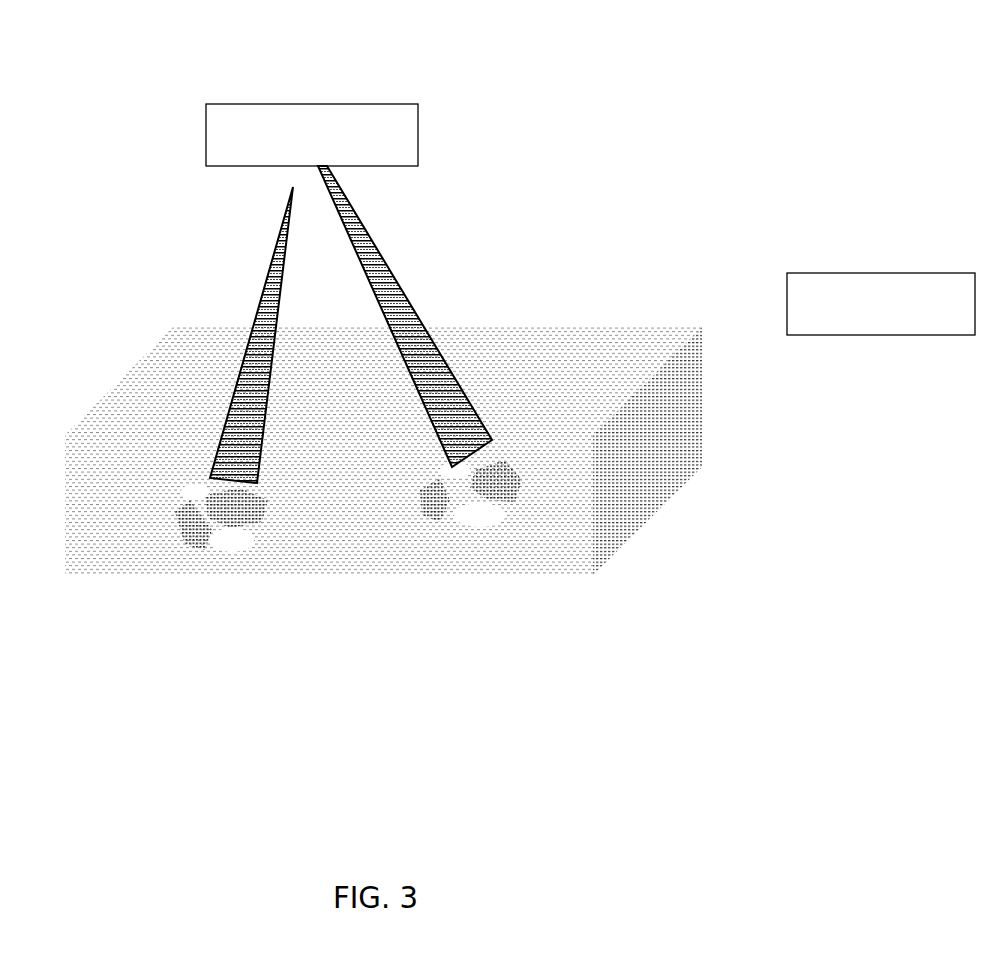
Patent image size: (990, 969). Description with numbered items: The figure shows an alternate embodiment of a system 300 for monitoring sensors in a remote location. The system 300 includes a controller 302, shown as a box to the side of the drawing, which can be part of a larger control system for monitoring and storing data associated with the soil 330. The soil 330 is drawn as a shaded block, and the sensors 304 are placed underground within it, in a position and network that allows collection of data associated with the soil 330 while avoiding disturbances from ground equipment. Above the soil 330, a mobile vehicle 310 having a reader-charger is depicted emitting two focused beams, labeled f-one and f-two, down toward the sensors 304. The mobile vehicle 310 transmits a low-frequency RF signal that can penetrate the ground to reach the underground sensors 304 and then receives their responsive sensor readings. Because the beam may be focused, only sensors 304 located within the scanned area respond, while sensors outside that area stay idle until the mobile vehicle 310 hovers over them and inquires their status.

The system 300 is at (706, 154).
The controller 302 is at (900, 331).
The sensors 304 is at (460, 500).
The mobile vehicle 310 is at (330, 161).
The soil 330 is at (565, 565).